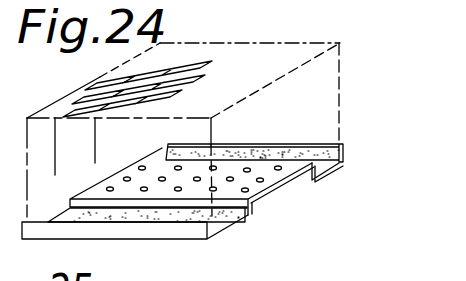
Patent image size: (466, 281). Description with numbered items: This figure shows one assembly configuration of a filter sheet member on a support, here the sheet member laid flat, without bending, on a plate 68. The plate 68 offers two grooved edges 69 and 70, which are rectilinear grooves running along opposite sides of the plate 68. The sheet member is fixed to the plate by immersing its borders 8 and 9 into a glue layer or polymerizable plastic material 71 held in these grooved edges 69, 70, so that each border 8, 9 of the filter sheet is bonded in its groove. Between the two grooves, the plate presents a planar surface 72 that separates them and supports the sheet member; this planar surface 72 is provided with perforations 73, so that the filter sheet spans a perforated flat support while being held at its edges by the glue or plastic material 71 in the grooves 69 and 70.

The border 8 is at (242, 218).
The border 9 is at (294, 151).
The plate 68 is at (280, 187).
The grooved edge 69 is at (196, 221).
The grooved edge 70 is at (319, 172).
The glue layer or polymerizable plastic material 71 is at (213, 216).
The planar surface 72 is at (140, 175).
The perforations 73 is at (247, 169).